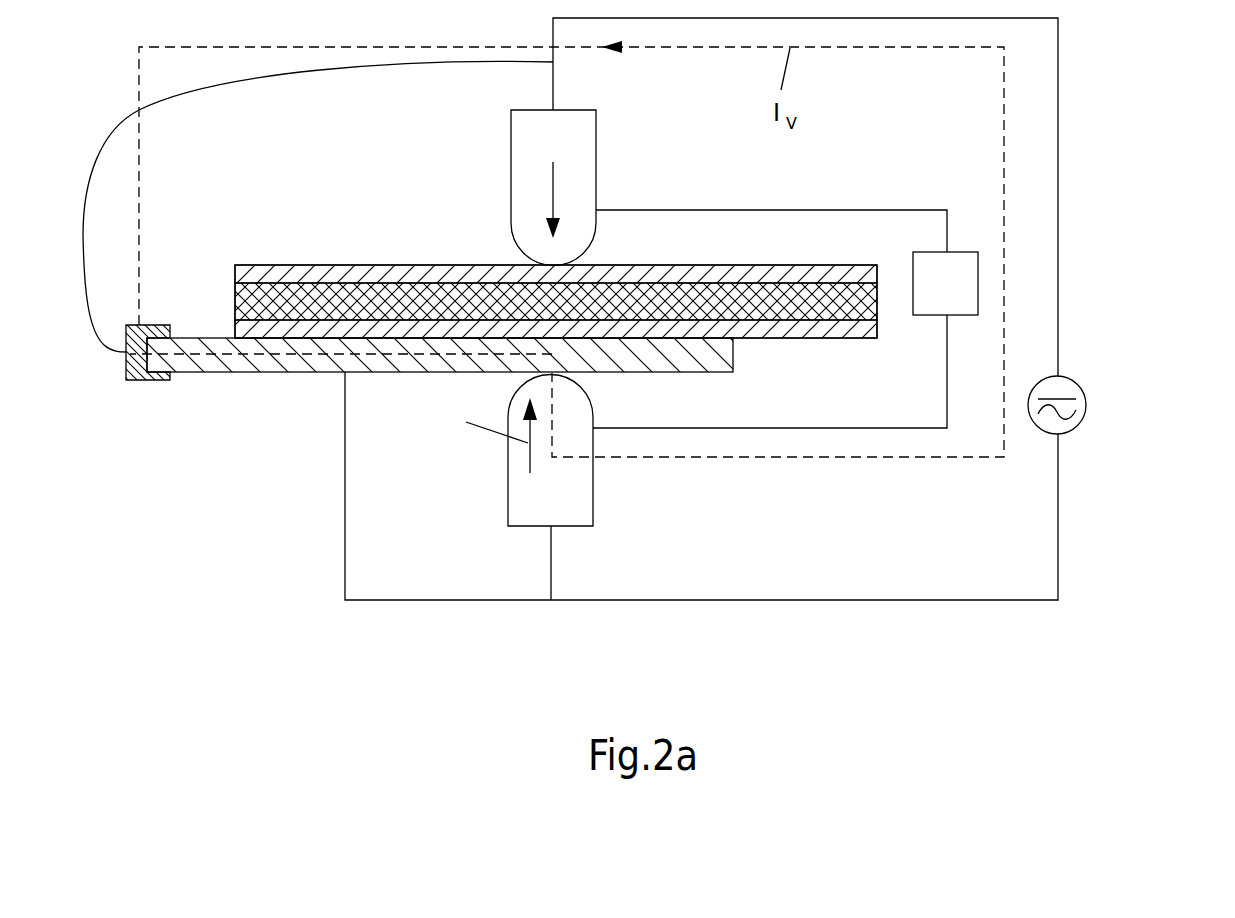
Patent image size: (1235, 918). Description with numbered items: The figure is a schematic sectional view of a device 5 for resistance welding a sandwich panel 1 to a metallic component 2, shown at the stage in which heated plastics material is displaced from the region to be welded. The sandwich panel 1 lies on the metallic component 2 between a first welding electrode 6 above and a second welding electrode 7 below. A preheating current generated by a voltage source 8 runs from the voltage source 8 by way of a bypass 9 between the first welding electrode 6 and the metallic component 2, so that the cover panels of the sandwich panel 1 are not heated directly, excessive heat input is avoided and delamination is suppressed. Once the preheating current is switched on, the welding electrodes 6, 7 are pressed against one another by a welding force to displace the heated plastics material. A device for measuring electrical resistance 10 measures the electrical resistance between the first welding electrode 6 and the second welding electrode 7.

The sandwich panel 1 is at (357, 264).
The metallic component 2 is at (223, 373).
The device 5 is at (1102, 102).
The first welding electrode 6 is at (511, 122).
The second welding electrode 7 is at (508, 512).
The voltage source 8 is at (1080, 391).
The bypass 9 is at (101, 152).
The device for measuring electrical resistance 10 is at (960, 297).